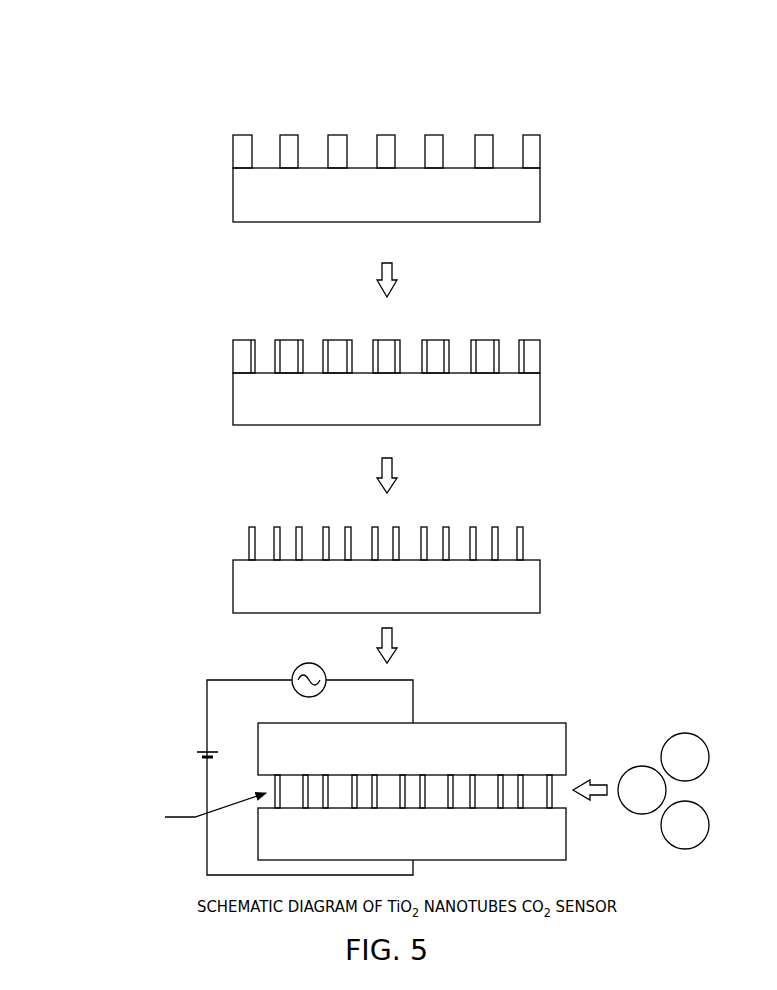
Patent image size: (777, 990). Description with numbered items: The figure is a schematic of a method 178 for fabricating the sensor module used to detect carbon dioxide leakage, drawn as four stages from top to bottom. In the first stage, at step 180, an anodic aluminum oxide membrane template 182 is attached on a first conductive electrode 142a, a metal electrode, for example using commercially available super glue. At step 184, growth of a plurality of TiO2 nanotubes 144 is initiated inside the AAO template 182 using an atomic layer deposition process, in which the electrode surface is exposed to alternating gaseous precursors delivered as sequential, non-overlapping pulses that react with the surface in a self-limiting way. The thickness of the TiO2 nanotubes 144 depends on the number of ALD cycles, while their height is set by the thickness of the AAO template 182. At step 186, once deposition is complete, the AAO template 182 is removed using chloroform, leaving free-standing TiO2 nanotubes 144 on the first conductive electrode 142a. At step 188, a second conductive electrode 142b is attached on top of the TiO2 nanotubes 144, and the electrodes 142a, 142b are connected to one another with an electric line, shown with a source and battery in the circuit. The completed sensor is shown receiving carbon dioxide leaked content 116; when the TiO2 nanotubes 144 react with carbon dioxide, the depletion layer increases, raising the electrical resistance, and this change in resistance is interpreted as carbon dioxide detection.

The method 178 is at (272, 60).
The step 180 is at (503, 96).
The anodic aluminum oxide (AAO) membrane template 182 is at (526, 135).
The first conductive electrode 142a is at (518, 207).
The second conductive electrode 142b is at (545, 757).
The TiO2 nanotubes 144 is at (252, 340).
The step 184 is at (515, 290).
The step 186 is at (497, 486).
The step 188 is at (196, 755).
The carbon dioxide leaked content 116 is at (688, 733).